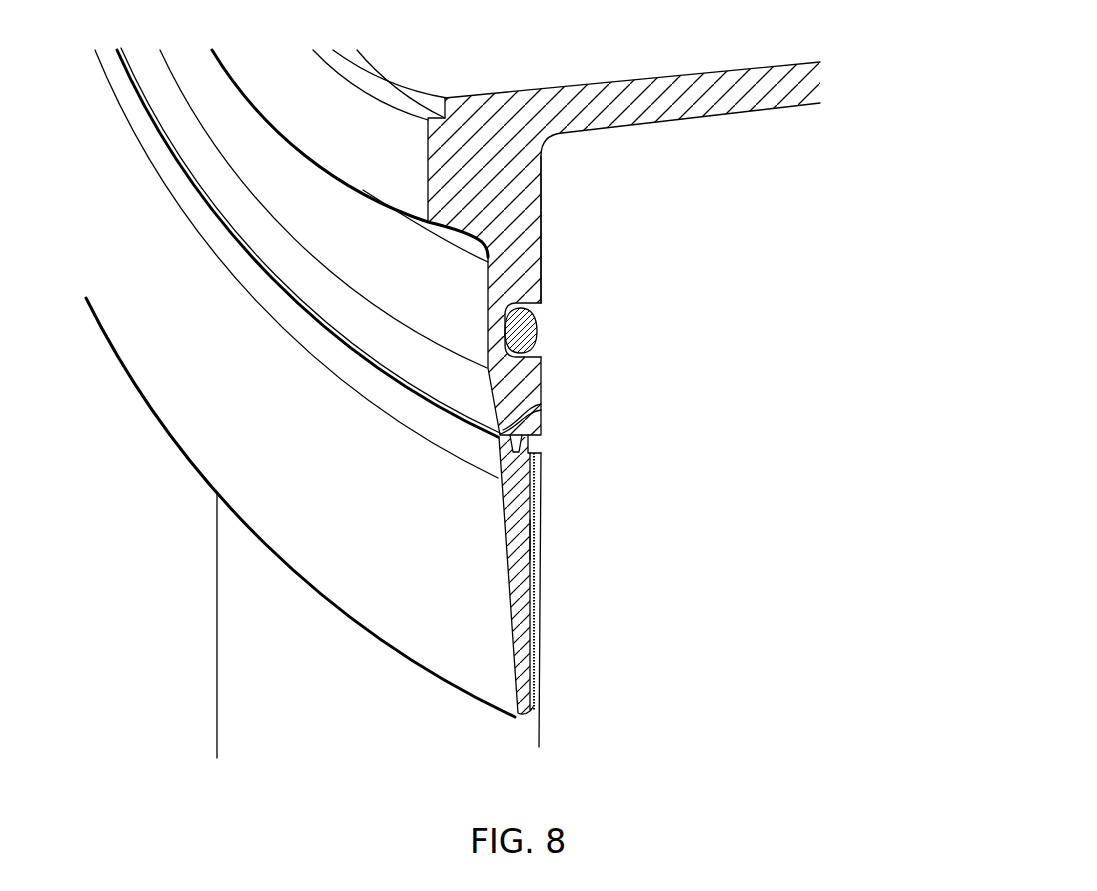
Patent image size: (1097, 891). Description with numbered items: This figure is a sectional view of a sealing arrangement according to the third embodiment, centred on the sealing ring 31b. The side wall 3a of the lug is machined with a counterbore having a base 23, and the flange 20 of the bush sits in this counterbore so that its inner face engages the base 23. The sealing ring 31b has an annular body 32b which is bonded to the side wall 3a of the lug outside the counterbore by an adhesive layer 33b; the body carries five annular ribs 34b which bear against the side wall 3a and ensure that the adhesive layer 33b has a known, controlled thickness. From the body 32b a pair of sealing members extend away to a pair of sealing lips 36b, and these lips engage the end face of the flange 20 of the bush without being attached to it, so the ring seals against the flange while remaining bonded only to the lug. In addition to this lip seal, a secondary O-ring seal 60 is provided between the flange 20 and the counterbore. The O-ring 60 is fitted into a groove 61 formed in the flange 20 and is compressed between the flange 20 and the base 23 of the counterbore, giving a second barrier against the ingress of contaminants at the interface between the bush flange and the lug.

The flange 20 is at (541, 241).
The base 23 is at (538, 170).
The groove 61 is at (535, 311).
The secondary O-ring seal 60 is at (528, 333).
The sealing lips 36b is at (541, 410).
The side wall 3a is at (530, 500).
The annular ribs 34b is at (538, 523).
The annular body 32b is at (523, 537).
The adhesive layer 33b is at (537, 583).
The sealing ring 31b is at (352, 669).